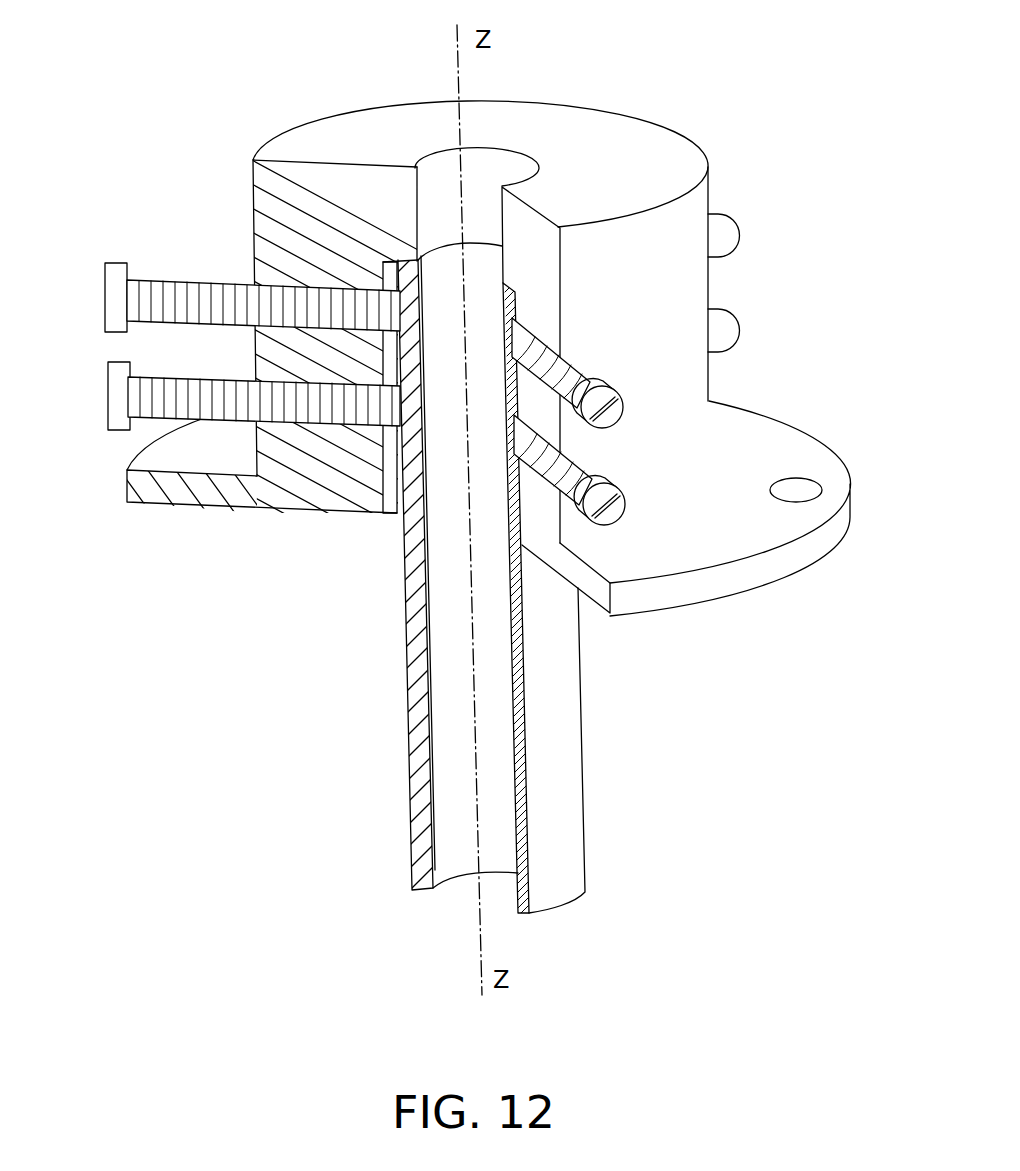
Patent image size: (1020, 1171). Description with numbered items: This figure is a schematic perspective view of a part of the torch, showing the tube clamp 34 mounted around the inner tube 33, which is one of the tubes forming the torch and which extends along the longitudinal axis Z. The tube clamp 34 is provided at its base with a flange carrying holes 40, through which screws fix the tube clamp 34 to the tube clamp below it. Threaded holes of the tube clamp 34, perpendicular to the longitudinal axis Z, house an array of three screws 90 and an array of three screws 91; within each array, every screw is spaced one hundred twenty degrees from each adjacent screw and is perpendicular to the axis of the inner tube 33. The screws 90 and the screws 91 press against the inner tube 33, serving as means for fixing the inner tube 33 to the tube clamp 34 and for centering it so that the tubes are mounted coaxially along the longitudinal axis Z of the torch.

The inner tube 33 is at (427, 753).
The tube clamp 34 is at (377, 132).
The holes 40 is at (800, 485).
The screws 90 is at (202, 297).
The screws 91 is at (197, 393).